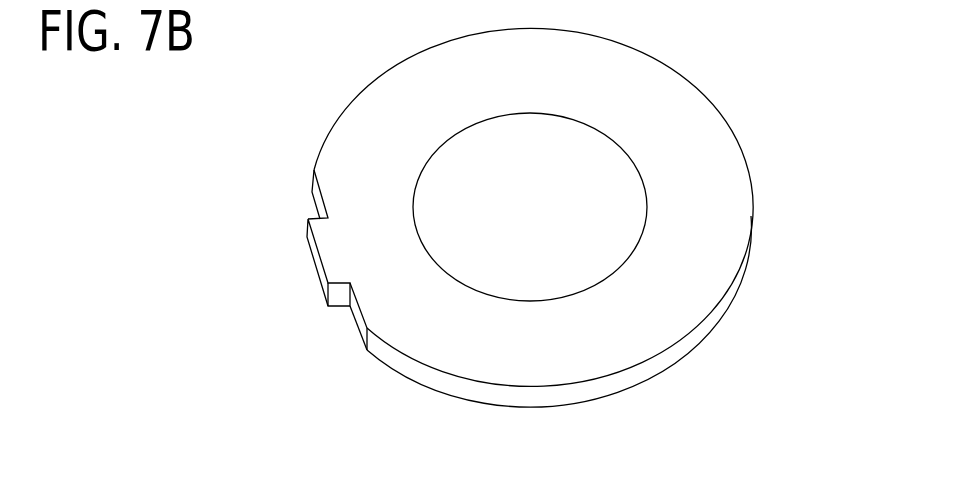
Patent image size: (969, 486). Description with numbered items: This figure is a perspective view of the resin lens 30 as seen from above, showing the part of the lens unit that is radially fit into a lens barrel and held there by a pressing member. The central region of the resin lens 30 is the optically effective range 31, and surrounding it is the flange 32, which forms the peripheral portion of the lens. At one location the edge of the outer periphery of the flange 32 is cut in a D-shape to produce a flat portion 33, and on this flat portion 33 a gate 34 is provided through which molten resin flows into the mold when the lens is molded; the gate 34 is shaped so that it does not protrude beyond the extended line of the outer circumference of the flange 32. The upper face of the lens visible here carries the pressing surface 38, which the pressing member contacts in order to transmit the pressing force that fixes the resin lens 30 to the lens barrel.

The resin lens 30 is at (720, 80).
The optically effective range 31 is at (595, 183).
The flange 32 is at (713, 253).
The flat portion 33 is at (360, 328).
The gate 34 is at (327, 255).
The pressing surface 38 is at (398, 118).